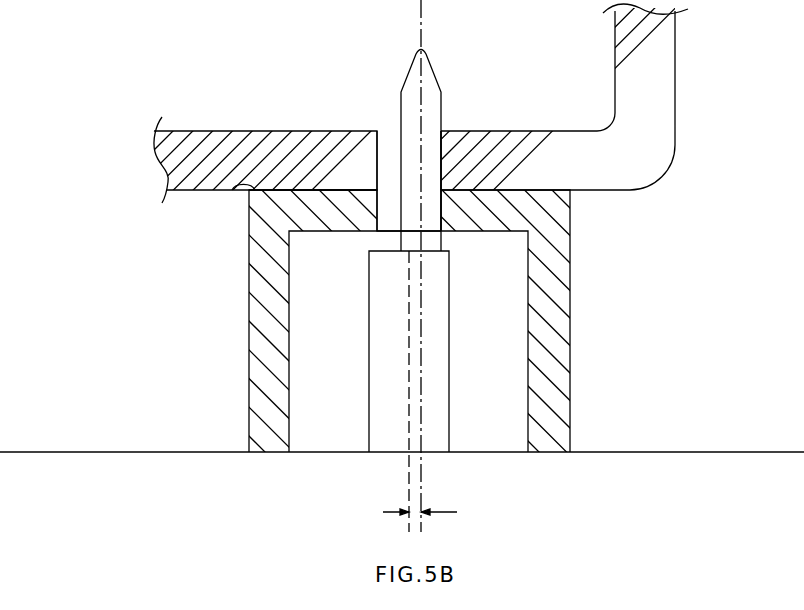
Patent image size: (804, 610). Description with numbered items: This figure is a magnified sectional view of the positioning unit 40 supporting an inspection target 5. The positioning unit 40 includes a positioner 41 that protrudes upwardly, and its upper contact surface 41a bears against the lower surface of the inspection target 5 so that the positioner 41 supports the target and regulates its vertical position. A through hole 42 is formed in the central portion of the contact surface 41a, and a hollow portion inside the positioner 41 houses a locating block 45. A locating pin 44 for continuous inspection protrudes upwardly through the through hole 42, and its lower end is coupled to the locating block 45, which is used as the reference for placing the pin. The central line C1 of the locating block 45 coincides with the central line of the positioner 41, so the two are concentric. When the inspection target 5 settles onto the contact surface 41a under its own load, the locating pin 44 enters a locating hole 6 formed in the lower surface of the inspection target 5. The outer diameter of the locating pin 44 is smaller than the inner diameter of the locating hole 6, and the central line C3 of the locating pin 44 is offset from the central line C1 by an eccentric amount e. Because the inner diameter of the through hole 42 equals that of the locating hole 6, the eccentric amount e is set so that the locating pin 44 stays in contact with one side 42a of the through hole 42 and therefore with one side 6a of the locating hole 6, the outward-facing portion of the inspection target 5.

The inspection target 5 is at (248, 145).
The locating hole 6 is at (378, 133).
The one side of the locating hole 6a is at (442, 133).
The positioning unit 40 is at (402, 319).
The positioner 41 is at (250, 307).
The contact surface 41a is at (243, 196).
The through hole 42 is at (376, 232).
The one side of the through hole 42a is at (441, 235).
The locating pin for continuous inspection 44 is at (415, 83).
The locating block 45 is at (444, 381).
The central line of the locating block C1 is at (408, 390).
The central line of the locating pin for continuous inspection C3 is at (423, 80).
The eccentric amount e is at (420, 503).